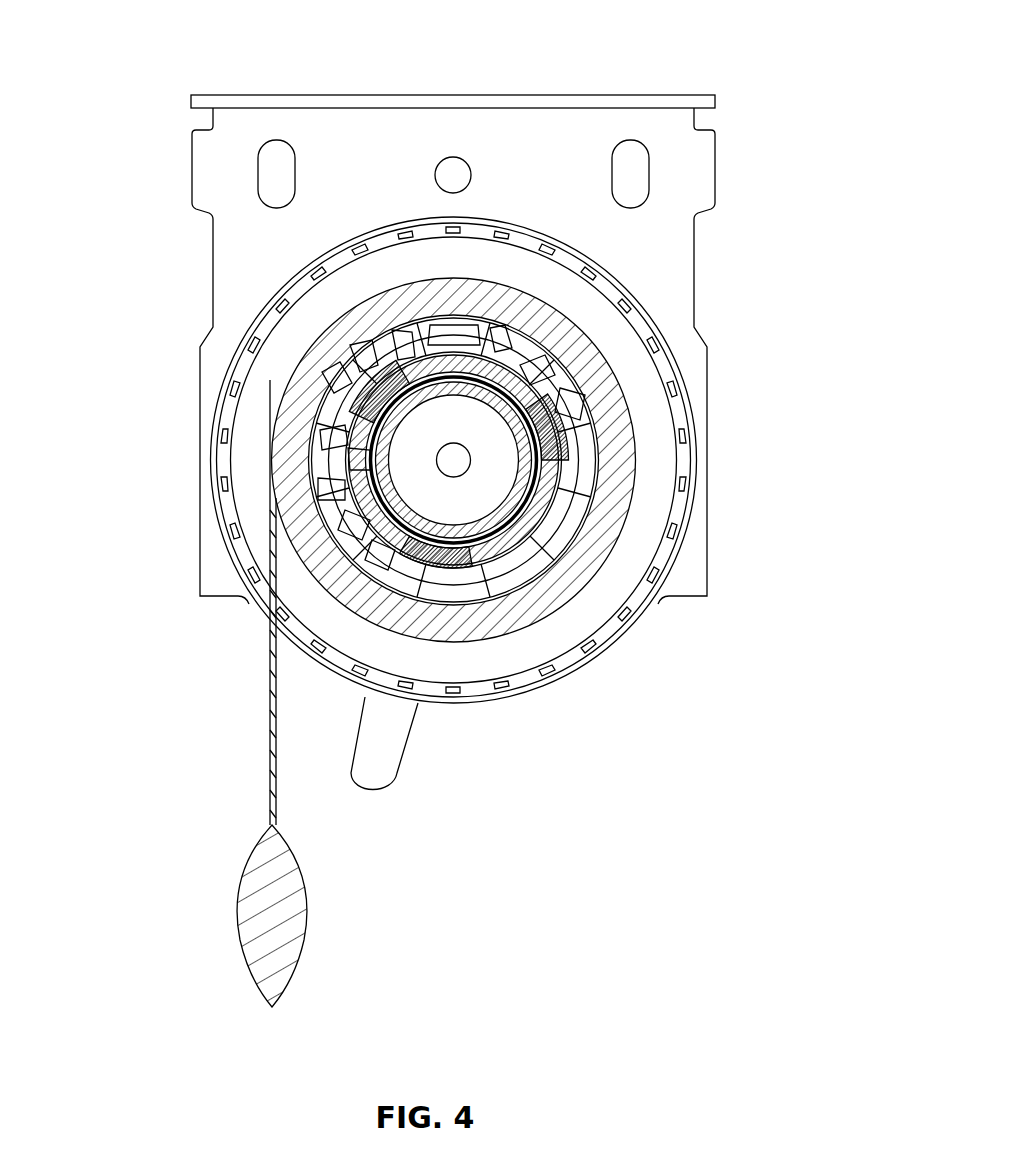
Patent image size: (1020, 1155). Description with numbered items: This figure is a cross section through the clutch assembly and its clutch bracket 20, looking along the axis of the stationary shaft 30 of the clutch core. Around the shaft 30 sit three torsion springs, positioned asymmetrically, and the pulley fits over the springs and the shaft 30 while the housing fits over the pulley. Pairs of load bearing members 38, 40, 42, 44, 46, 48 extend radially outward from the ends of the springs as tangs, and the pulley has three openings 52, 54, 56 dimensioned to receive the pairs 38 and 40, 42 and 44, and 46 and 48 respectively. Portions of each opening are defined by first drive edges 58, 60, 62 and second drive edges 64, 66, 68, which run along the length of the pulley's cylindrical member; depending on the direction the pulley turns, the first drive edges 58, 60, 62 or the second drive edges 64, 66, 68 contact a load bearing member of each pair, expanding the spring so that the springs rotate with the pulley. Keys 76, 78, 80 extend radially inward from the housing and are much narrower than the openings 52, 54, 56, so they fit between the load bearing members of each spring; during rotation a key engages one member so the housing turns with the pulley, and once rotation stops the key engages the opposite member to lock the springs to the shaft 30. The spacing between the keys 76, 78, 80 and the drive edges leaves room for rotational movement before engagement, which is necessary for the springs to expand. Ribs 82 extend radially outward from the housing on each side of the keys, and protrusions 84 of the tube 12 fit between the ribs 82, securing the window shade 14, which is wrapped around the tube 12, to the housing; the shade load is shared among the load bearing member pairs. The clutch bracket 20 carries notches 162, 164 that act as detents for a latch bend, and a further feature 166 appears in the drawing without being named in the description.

The tube 12 is at (425, 585).
The window shade 14 is at (340, 420).
The clutch bracket 20 is at (667, 133).
The shaft 30 is at (420, 570).
The load bearing member 38 is at (480, 560).
The load bearing member 40 is at (557, 477).
The load bearing member 42 is at (530, 370).
The load bearing member 44 is at (390, 360).
The load bearing member 46 is at (387, 462).
The load bearing member 48 is at (387, 563).
The opening 52 is at (493, 560).
The opening 54 is at (537, 403).
The opening 56 is at (330, 405).
The first drive edge 58 is at (387, 597).
The first drive edge 60 is at (540, 467).
The first drive edge 62 is at (370, 395).
The second drive edge 64 is at (443, 587).
The second drive edge 66 is at (543, 400).
The second drive edge 68 is at (350, 455).
The key 76 is at (540, 520).
The key 78 is at (457, 337).
The key 80 is at (395, 553).
The rib 82 is at (393, 385).
The protrusion 84 is at (447, 357).
The notch 162 is at (560, 442).
The notch 164 is at (325, 418).
The cam surface 166 is at (433, 587).